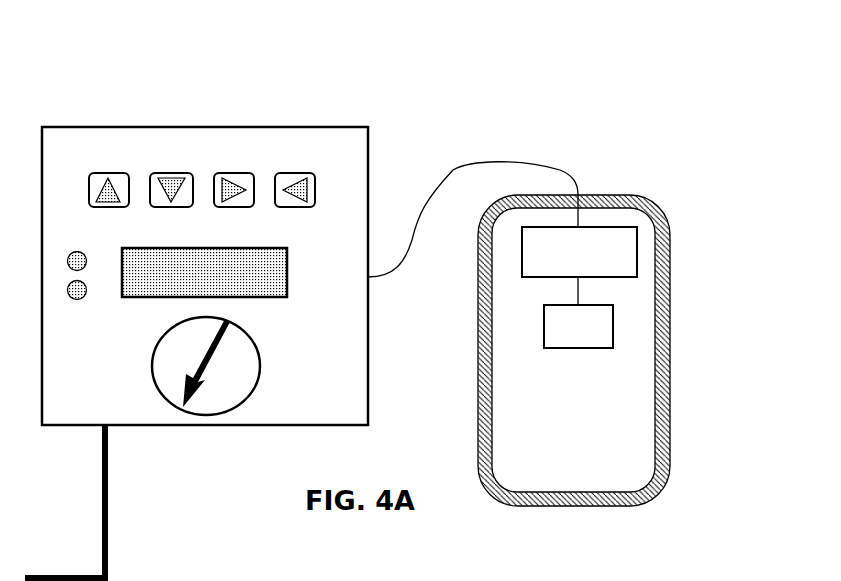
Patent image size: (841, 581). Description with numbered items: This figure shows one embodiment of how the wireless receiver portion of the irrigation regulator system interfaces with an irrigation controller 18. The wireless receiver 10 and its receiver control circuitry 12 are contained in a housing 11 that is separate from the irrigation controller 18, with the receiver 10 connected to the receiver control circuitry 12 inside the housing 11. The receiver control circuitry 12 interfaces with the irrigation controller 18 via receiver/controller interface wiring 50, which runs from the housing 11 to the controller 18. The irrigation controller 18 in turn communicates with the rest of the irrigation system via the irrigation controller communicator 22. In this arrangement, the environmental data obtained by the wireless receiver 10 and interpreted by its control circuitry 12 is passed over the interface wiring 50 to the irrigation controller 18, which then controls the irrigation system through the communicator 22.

The irrigation controller 18 is at (258, 113).
The irrigation controller communicator 22 is at (65, 501).
The receiver/controller interface wiring 50 is at (498, 158).
The housing 11 is at (655, 168).
The receiver control circuitry 12 is at (623, 258).
The wireless receiver 10 is at (597, 335).